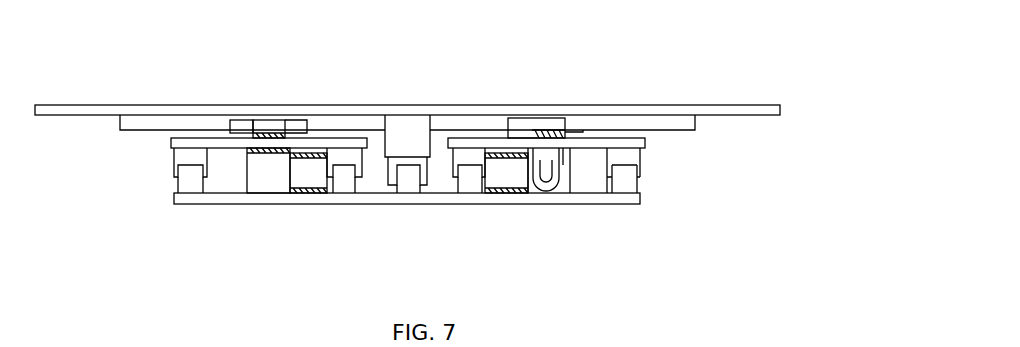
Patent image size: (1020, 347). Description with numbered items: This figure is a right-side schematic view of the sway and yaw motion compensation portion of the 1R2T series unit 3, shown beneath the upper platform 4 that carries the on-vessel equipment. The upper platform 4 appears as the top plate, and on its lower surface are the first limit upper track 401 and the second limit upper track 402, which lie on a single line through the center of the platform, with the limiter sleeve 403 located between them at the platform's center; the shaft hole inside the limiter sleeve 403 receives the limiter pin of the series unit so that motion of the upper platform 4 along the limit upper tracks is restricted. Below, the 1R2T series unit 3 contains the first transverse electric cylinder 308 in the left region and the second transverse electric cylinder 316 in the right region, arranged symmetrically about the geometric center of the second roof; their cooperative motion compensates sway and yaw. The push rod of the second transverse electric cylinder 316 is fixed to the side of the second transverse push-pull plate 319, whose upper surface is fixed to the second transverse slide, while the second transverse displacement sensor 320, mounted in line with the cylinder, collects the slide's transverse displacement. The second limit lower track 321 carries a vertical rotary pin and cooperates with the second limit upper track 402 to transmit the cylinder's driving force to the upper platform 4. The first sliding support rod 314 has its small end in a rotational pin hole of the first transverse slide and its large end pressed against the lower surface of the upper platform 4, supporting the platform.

The upper platform 4 is at (425, 71).
The first limit upper track 401 is at (238, 98).
The second limit upper track 402 is at (562, 98).
The limiter sleeve 403 is at (434, 111).
The first sliding support rod 314 is at (254, 102).
The second limit lower track 321 is at (554, 102).
The 1R2T series unit 3 is at (398, 190).
The first transverse electric cylinder 308 is at (295, 195).
The second transverse electric cylinder 316 is at (573, 195).
The second transverse push-pull plate 319 is at (579, 217).
The second transverse displacement sensor 320 is at (515, 195).